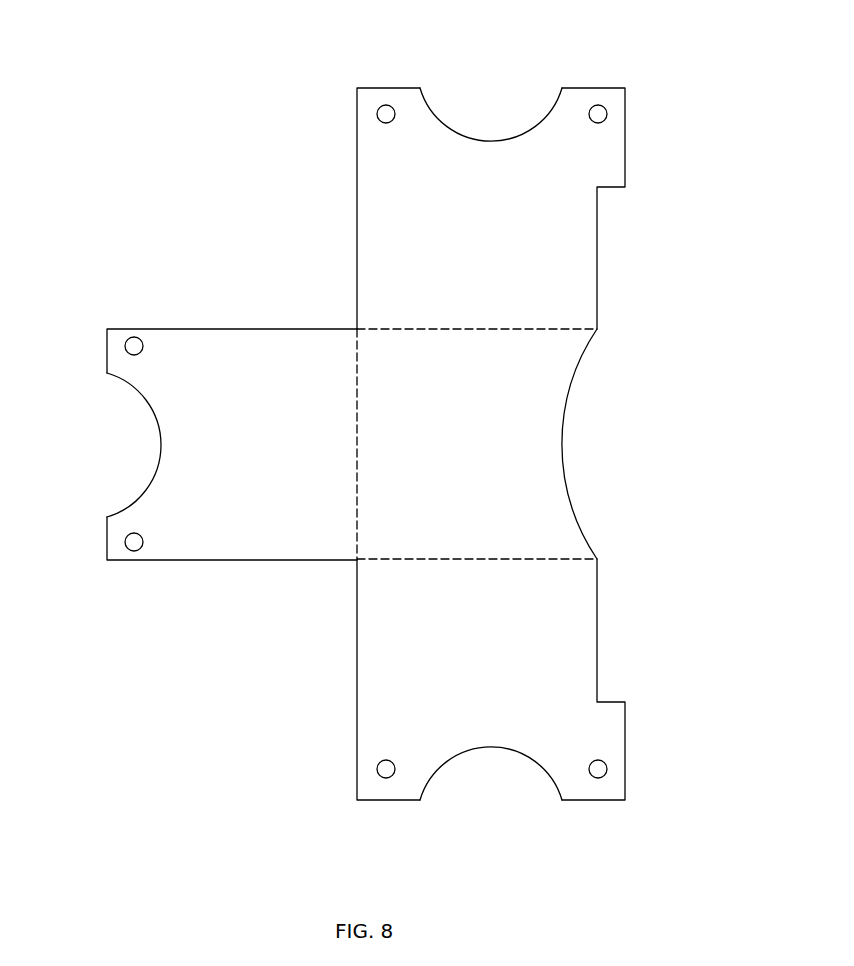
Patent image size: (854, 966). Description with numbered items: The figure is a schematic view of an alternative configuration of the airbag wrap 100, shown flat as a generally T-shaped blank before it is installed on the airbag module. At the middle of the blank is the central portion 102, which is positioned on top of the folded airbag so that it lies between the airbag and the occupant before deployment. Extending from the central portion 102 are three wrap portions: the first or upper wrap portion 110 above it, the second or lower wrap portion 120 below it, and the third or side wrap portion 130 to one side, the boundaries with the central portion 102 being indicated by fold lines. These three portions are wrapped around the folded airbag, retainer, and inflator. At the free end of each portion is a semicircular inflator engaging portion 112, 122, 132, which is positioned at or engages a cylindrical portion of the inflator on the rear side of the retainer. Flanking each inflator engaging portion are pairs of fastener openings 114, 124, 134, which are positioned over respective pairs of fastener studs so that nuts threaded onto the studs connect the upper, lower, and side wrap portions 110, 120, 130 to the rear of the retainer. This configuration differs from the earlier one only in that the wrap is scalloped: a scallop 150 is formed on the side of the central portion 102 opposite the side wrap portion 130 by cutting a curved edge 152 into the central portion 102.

The airbag wrap 100 is at (256, 178).
The central portion 102 is at (530, 423).
The upper wrap portion 110 is at (387, 232).
The inflator engaging portion 112 is at (500, 140).
The fastener openings 114 is at (385, 105).
The lower wrap portion 120 is at (393, 667).
The inflator engaging portion 122 is at (495, 748).
The fastener openings 124 is at (386, 778).
The side wrap portion 130 is at (237, 358).
The inflator engaging portion 132 is at (160, 443).
The fastener openings 134 is at (125, 347).
The scallop 150 is at (612, 431).
The curved edge 152 is at (573, 522).